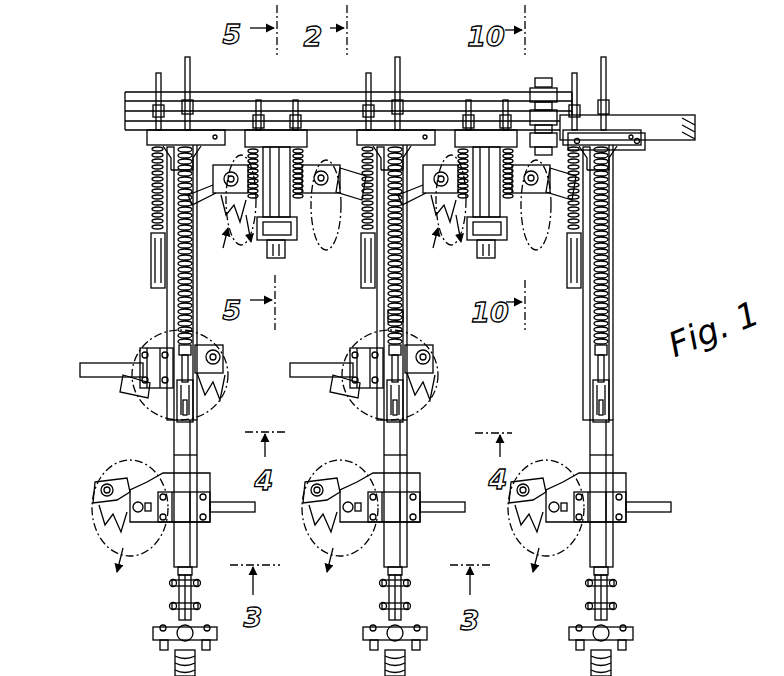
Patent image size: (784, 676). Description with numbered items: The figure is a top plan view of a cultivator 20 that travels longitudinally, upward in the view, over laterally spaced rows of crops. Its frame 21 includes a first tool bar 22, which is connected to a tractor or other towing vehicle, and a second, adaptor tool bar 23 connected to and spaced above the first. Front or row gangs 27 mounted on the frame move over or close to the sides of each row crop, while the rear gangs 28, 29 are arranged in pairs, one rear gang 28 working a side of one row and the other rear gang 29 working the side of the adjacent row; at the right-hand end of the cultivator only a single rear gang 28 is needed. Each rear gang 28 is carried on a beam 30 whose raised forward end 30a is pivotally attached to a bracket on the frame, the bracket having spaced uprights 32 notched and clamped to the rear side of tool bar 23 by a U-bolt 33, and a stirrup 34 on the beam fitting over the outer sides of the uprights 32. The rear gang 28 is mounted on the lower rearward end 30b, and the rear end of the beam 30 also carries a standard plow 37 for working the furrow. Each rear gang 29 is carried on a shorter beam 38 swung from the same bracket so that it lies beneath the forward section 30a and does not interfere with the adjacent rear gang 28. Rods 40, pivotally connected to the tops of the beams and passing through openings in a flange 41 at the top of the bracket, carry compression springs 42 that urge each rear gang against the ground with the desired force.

The cultivator 20 is at (358, 352).
The frame 21 is at (423, 90).
The first tool bar 22 is at (285, 99).
The second tool bar 23 is at (660, 112).
The front gang 27 is at (375, 162).
The rear gang 28 is at (88, 532).
The rear gang 29 is at (228, 398).
The beam 30 is at (613, 256).
The forward end of the beam 30a is at (406, 251).
The rearward end of the beam 30b is at (403, 549).
The uprights 32 is at (153, 156).
The U-bolt 33 is at (275, 100).
The stirrup 34 is at (170, 180).
The plow 37 is at (173, 624).
The beam 38 is at (362, 318).
The rod 40 is at (155, 270).
The flange 41 is at (648, 146).
The compression spring 42 is at (403, 316).